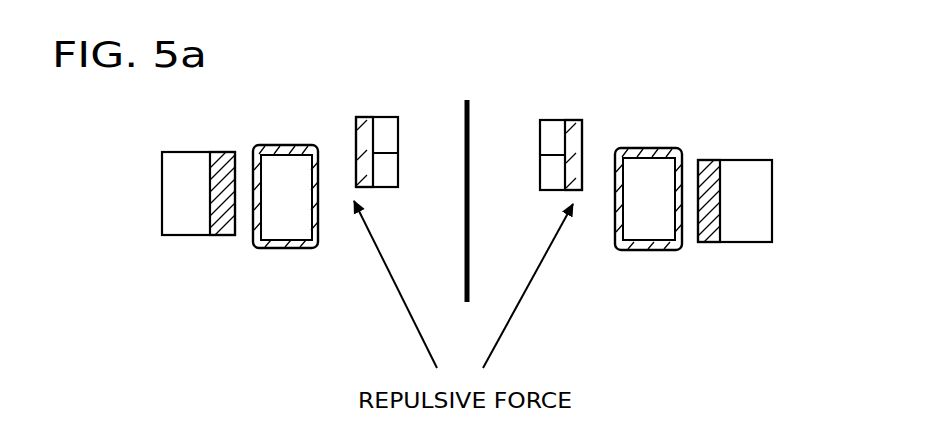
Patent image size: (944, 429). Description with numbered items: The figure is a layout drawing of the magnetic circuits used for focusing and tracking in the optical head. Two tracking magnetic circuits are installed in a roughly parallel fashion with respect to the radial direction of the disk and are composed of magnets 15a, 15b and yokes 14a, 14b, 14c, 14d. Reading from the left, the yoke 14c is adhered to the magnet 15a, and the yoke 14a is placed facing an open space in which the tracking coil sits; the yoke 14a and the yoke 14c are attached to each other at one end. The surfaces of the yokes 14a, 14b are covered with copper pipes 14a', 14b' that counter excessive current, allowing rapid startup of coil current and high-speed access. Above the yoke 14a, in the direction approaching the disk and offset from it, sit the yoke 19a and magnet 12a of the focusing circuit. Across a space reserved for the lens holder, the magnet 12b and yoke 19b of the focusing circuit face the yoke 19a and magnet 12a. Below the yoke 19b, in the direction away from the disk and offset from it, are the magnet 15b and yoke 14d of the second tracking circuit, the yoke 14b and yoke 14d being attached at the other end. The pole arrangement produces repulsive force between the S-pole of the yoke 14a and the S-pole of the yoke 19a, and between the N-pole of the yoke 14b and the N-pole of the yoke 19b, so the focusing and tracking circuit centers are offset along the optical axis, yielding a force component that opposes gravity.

The magnet 12a is at (387, 120).
The magnet 12b is at (550, 125).
The yoke 19a is at (368, 120).
The yoke 19b is at (572, 122).
The yoke 14a is at (287, 238).
The copper pipe 14a' is at (290, 293).
The yoke 14b is at (641, 244).
The copper pipe 14b' is at (637, 292).
The yoke 14c is at (180, 235).
The yoke 14d is at (753, 244).
The magnet 15a is at (219, 235).
The magnet 15b is at (713, 244).